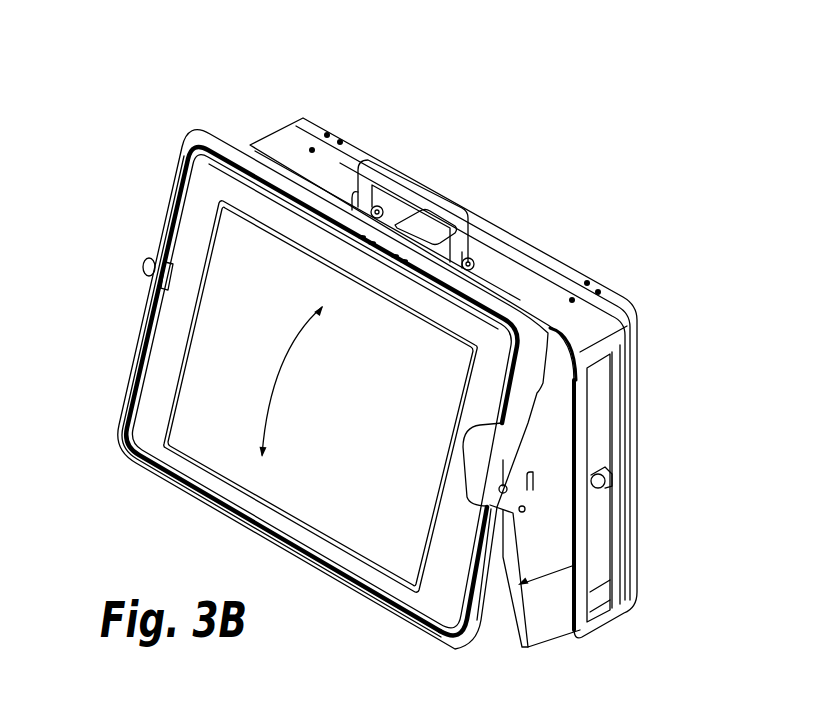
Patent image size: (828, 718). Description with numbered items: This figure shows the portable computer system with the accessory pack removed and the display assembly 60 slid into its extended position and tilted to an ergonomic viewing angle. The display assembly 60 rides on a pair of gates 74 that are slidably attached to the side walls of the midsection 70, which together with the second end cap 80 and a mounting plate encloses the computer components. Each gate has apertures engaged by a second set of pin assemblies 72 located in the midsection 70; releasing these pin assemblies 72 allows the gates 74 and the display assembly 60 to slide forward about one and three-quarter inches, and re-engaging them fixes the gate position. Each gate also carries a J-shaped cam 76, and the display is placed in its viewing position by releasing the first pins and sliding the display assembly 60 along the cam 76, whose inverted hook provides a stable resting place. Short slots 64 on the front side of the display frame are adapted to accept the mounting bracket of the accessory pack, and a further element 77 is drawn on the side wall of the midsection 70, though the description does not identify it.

The display assembly 60 is at (200, 135).
The midsection 70 is at (258, 126).
The second end cap 80 is at (310, 112).
The short slots 64 is at (150, 292).
The side slot 77 is at (602, 386).
The second set of pin assemblies 72 is at (598, 484).
The gates 74 is at (553, 600).
The cam 76 is at (336, 381).